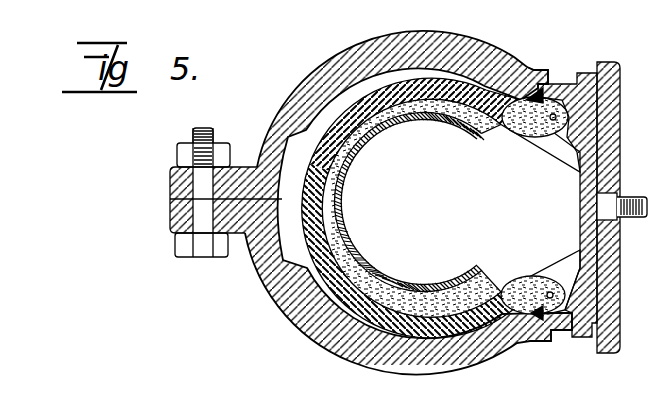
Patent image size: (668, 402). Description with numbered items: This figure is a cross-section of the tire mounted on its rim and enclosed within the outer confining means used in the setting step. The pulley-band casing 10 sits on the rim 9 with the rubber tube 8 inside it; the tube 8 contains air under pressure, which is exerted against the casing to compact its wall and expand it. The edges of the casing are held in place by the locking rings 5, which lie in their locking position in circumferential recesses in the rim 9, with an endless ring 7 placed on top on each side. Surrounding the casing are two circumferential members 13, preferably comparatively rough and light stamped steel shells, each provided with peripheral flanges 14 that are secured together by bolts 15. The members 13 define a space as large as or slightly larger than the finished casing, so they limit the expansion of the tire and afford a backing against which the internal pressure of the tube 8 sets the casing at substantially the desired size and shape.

The locking ring 5 is at (579, 72).
The endless ring 7 is at (554, 100).
The rubber tube 8 is at (501, 117).
The rim 9 is at (616, 125).
The pulley-band casing 10 is at (305, 244).
The circumferential member 13 is at (293, 88).
The peripheral flange 14 is at (178, 215).
The bolt 15 is at (197, 252).